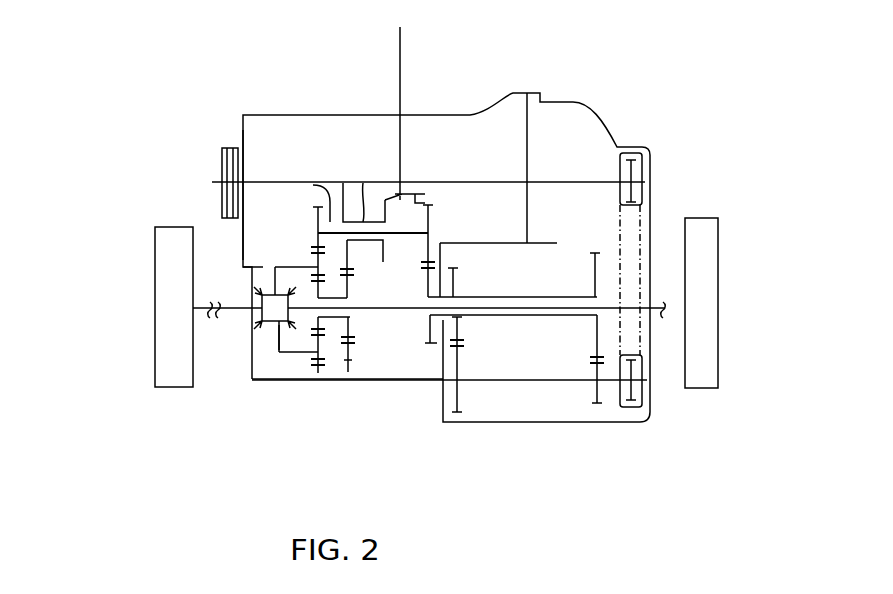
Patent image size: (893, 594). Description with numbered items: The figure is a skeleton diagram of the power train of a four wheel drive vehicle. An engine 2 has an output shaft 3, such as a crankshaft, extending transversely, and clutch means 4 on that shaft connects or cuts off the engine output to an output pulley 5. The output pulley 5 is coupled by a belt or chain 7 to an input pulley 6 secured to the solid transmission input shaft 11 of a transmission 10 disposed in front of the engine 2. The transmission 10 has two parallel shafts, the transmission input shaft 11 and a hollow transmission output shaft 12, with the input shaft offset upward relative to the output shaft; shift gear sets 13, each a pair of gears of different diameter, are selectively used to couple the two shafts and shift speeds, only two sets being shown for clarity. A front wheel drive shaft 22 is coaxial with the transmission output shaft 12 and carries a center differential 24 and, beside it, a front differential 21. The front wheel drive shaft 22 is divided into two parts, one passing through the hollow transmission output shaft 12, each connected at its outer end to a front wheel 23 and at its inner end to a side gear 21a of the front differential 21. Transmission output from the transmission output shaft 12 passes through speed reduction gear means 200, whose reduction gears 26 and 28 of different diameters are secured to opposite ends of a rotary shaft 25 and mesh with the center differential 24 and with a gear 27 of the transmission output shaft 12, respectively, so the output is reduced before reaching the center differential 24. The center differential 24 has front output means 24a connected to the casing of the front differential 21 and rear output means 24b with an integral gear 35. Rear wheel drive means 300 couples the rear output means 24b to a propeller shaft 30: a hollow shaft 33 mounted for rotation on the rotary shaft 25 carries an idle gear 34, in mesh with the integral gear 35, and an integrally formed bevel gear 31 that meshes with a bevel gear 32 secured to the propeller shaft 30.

The engine 2 is at (243, 115).
The output shaft 3 is at (260, 183).
The clutch means 4 is at (603, 122).
The output pulley 5 is at (633, 162).
The input pulley 6 is at (643, 395).
The belt or chain 7 is at (642, 222).
The transmission 10 is at (567, 423).
The transmission input shaft 11 is at (518, 383).
The transmission output shaft 12 is at (505, 297).
The shift gear sets 13 is at (460, 427).
The front differential 21 is at (265, 342).
The side gear 21a is at (292, 290).
The front wheel drive shaft 22 is at (240, 312).
The front wheels 23 is at (155, 325).
The center differential 24 is at (318, 375).
The front output means 24a is at (283, 340).
The rear output means 24b is at (348, 344).
The rotary shaft 25 is at (318, 207).
The reduction gear 26 is at (316, 220).
The gear 27 is at (428, 350).
The reduction gear 28 is at (430, 207).
The propeller shaft 30 is at (400, 45).
The bevel gear 31 is at (390, 262).
The bevel gear 32 is at (425, 200).
The hollow shaft 33 is at (363, 195).
The idle gear 34 is at (343, 183).
The integral gear 35 is at (352, 362).
The speed reduction gear means 200 is at (407, 242).
The rear wheel drive means 300 is at (387, 170).